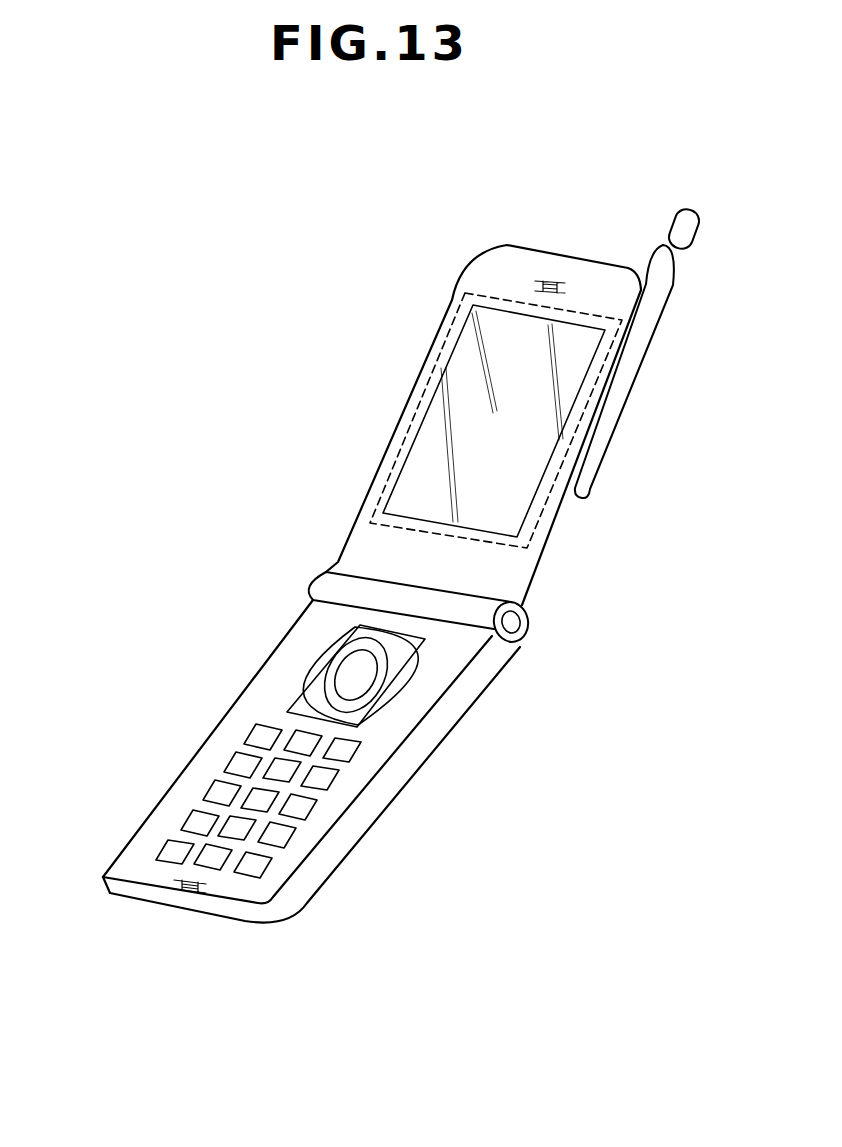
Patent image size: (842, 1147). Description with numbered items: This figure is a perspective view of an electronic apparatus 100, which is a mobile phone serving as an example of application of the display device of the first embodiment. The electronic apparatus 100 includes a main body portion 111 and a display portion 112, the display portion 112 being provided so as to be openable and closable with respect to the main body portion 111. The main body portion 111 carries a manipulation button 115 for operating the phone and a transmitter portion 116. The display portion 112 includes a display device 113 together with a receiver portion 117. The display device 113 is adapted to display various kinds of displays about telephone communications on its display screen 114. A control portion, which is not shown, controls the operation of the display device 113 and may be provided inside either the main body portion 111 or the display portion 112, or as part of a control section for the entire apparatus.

The electronic apparatus 100 is at (402, 245).
The main body portion 111 is at (285, 597).
The display portion 112 is at (729, 230).
The display device 113 is at (406, 403).
The display screen 114 is at (388, 512).
The manipulation button 115 is at (216, 856).
The transmitter portion 116 is at (187, 891).
The receiver portion 117 is at (543, 278).